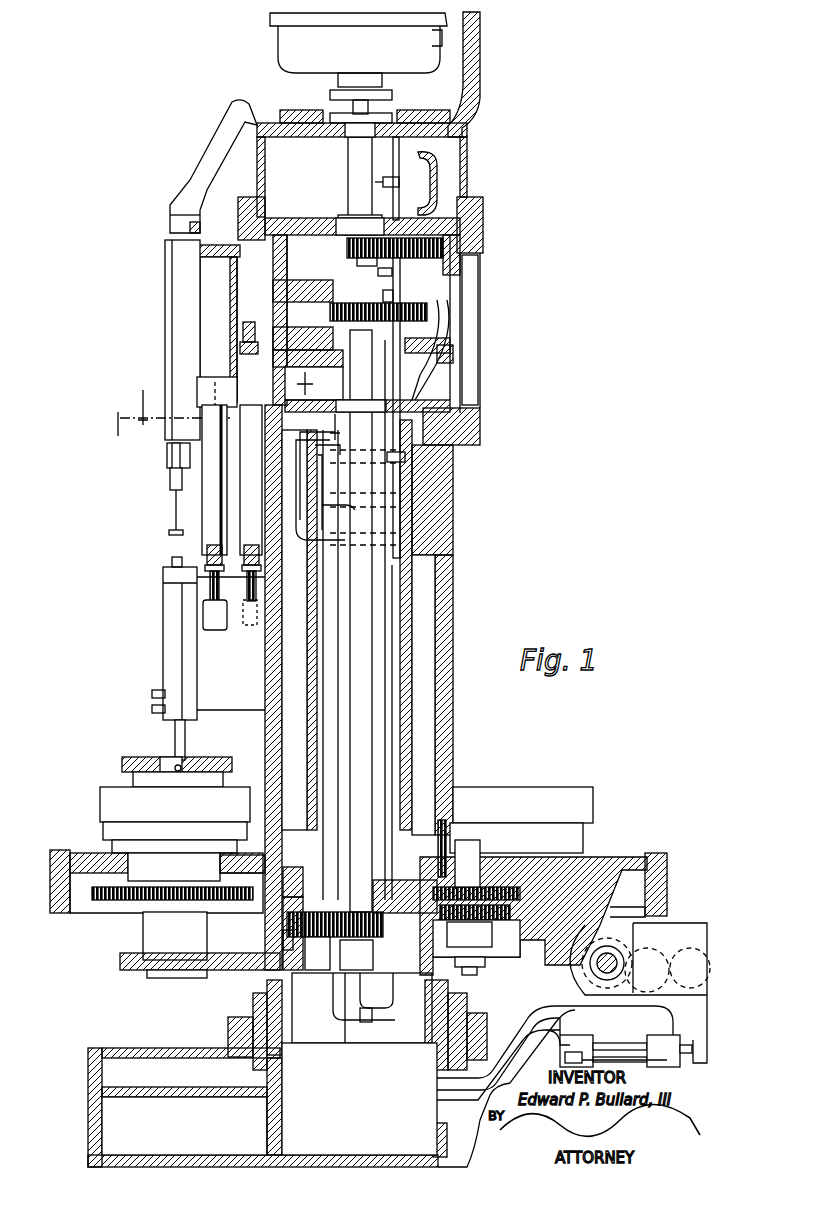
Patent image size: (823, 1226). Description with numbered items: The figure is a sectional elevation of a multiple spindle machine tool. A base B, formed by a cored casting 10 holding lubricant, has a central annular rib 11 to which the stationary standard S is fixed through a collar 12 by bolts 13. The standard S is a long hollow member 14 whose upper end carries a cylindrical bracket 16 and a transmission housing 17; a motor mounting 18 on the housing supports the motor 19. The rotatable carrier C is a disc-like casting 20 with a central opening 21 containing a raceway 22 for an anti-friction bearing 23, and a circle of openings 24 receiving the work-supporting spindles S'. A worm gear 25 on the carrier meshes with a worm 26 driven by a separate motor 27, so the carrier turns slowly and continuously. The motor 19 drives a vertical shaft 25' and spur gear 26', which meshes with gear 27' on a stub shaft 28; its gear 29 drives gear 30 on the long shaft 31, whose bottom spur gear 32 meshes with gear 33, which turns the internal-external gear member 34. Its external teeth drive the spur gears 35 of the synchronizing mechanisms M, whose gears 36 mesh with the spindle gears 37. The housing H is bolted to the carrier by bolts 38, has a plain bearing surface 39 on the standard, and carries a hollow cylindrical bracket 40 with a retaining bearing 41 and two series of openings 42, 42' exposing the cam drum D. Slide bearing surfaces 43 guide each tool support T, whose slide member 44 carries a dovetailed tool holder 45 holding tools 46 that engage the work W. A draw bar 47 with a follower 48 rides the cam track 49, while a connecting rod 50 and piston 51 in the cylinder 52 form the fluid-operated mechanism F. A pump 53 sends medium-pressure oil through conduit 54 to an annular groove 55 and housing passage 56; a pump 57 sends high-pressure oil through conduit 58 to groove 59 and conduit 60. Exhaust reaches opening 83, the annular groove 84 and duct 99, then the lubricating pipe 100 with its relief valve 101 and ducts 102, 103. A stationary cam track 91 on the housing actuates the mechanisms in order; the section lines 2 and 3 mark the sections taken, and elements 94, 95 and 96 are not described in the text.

The casting 10 is at (106, 1130).
The annular rib 11 is at (282, 1133).
The collar 12 is at (258, 1005).
The bolts 13 is at (282, 1044).
The hollow member 14 is at (304, 794).
The cylindrical bracket 16 is at (292, 396).
The transmission housing 17 is at (282, 280).
The motor mounting 18 is at (480, 92).
The motor 19 is at (284, 50).
The disc-like casting 20 is at (590, 855).
The central opening 21 is at (270, 968).
The raceway 22 is at (242, 856).
The anti-friction bearing 23 is at (305, 880).
The openings 24 is at (128, 866).
The worm gear 25 is at (374, 955).
The vertically disposed shaft 25' is at (356, 154).
The worm 26 is at (638, 960).
The spur gear 26' is at (379, 252).
The motor 27 is at (679, 993).
The gear 27' is at (479, 333).
The stub shaft 28 is at (402, 272).
The gear 29 is at (392, 303).
The gear 30 is at (330, 312).
The shaft 31 is at (365, 392).
The spur gear 32 is at (358, 912).
The spur gear 33 is at (339, 953).
The internal-external gear member 34 is at (283, 930).
The spur gears 35 is at (492, 928).
The spur gear 36 is at (472, 855).
The spindle gears 37 is at (118, 902).
The bolts 38 is at (448, 822).
The plain bearing surface 39 is at (425, 478).
The hollow cylindrical bracket 40 is at (480, 432).
The retaining bearing 41 is at (484, 228).
The openings 42 is at (221, 323).
The openings 42' is at (487, 330).
The slide bearing surfaces 43 is at (265, 668).
The slide member 44 is at (240, 700).
The tool holder 45 is at (170, 652).
The tools 46 is at (168, 758).
The draw bar 47 is at (248, 505).
The follower 48 is at (266, 352).
The cam track 49 is at (432, 340).
The connecting rod 50 is at (212, 484).
The piston 51 is at (208, 392).
The cylinder 52 is at (200, 344).
The fluid-operated pump 53 is at (584, 1036).
The conduit 54 is at (400, 1100).
The annular groove 55 is at (362, 536).
The passage 56 is at (296, 548).
The fluid-operated pump 57 is at (648, 1036).
The conduit 58 is at (408, 1082).
The annular groove 59 is at (348, 508).
The conduit 60 is at (295, 424).
The opening 83 is at (262, 476).
The annular groove 84 is at (364, 497).
The stationary cam track 91 is at (170, 232).
The bracket 94 is at (170, 480).
The stop 95 is at (167, 460).
The feeler 96 is at (172, 530).
The duct 99 is at (393, 466).
The lubricating pipe 100 is at (390, 604).
The pressure-relief valve 101 is at (372, 1020).
The duct 102 is at (385, 186).
The duct 103 is at (378, 272).
The section line 2 is at (225, 415).
The section line 3 is at (141, 387).
The base B is at (88, 1117).
The carrier C is at (612, 855).
The cam drum D is at (462, 352).
The fluid-operated mechanism F is at (165, 345).
The housing H is at (455, 749).
The synchronizing mechanism M is at (500, 885).
The standard S is at (453, 713).
The spindles S' is at (144, 863).
The tool holder T is at (160, 617).
The work W is at (115, 758).